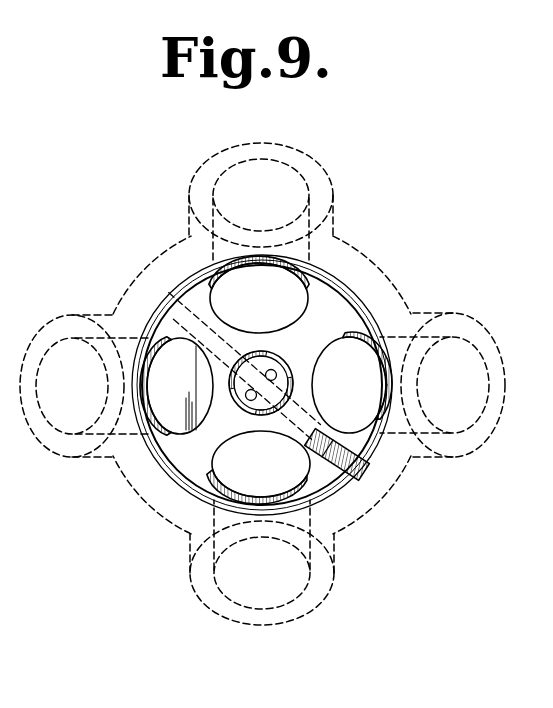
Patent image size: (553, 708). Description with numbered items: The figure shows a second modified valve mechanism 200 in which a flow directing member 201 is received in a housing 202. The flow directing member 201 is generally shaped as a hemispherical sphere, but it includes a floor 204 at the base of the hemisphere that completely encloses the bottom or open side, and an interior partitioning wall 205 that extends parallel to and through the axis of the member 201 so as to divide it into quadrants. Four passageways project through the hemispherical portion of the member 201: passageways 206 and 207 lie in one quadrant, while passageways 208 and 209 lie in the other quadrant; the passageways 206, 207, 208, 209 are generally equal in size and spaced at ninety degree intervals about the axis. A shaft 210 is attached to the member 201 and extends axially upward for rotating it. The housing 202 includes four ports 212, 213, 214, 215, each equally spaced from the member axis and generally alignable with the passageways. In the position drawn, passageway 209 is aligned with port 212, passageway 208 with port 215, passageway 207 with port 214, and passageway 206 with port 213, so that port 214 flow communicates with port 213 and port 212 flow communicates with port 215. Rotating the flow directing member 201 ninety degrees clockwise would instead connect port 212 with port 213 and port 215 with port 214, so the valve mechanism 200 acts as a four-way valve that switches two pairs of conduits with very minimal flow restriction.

The valve mechanism 200 is at (138, 530).
The flow directing member 201 is at (333, 297).
The housing 202 is at (152, 262).
The floor 204 is at (335, 441).
The interior partitioning wall 205 is at (322, 457).
The passageway 206 is at (316, 364).
The passageway 207 is at (299, 320).
The passageway 208 is at (211, 400).
The passageway 209 is at (239, 492).
The shaft 210 is at (278, 346).
The port 212 is at (258, 625).
The port 213 is at (487, 330).
The port 214 is at (278, 143).
The port 215 is at (48, 449).